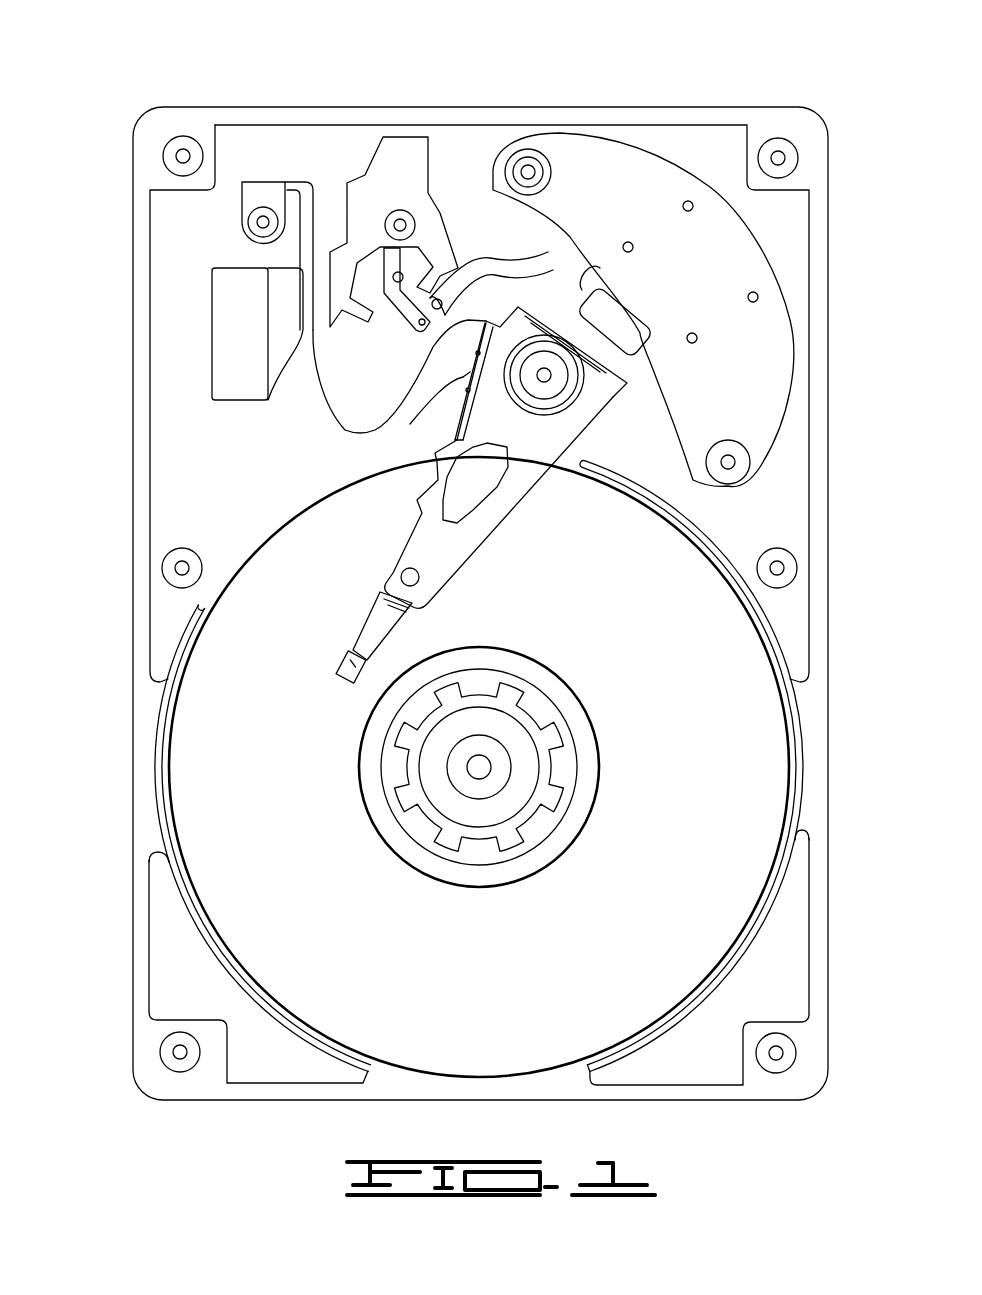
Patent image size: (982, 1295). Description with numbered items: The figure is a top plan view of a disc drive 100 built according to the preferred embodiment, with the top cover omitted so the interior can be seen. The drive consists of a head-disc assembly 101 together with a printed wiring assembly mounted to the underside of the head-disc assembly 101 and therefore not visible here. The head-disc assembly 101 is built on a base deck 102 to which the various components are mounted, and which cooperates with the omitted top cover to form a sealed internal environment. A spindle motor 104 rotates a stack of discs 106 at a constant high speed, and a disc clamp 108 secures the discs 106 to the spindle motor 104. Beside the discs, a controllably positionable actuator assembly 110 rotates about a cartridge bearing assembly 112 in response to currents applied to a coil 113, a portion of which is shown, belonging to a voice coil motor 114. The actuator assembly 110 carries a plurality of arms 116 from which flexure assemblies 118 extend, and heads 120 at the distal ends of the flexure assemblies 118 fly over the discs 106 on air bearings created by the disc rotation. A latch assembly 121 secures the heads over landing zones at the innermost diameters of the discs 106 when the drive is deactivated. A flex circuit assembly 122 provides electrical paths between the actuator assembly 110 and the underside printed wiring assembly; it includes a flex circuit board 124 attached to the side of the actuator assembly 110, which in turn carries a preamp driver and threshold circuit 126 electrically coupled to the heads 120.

The disc drive 100 is at (250, 88).
The head-disc assembly 101 is at (130, 267).
The base deck 102 is at (228, 468).
The spindle motor 104 is at (487, 795).
The discs 106 is at (720, 855).
The disc clamp 108 is at (378, 815).
The actuator assembly 110 is at (433, 495).
The cartridge bearing assembly 112 is at (553, 392).
The coil 113 is at (640, 330).
The voice coil motor 114 is at (578, 208).
The arms 116 is at (418, 555).
The flexure assemblies 118 is at (375, 632).
The heads 120 is at (345, 665).
The latch assembly 121 is at (403, 160).
The flex circuit assembly 122 is at (337, 433).
The flex circuit board 124 is at (440, 430).
The preamp driver and threshold circuit 126 is at (467, 377).